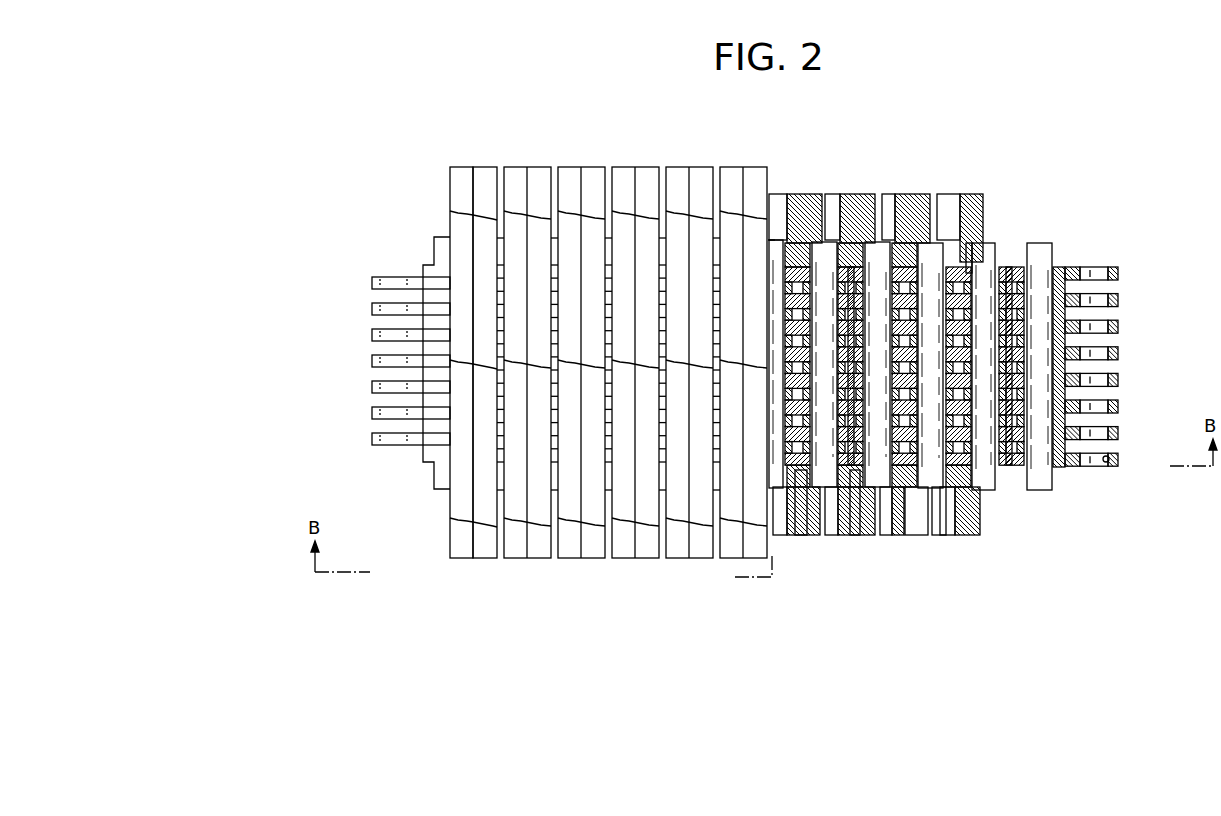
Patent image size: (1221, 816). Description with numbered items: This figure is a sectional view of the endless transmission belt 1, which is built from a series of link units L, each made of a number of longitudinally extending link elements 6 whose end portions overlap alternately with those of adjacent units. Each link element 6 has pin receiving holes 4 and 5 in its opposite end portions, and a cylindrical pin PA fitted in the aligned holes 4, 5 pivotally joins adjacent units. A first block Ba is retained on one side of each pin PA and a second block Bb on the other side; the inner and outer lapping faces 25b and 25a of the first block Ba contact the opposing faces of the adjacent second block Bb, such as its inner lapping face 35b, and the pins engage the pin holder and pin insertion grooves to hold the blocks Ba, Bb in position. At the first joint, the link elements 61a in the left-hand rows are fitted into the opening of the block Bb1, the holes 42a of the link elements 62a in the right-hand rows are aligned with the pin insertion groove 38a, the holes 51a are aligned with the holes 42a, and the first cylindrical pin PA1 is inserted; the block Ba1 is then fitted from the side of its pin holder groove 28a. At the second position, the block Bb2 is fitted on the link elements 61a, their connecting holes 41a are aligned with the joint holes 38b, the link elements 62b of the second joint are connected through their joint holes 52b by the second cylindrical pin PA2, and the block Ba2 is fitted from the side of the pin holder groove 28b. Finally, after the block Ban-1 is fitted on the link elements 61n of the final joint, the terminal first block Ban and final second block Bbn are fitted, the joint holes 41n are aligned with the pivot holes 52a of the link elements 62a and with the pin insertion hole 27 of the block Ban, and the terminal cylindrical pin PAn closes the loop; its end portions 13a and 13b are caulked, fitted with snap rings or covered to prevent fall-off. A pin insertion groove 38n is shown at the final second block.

The first block Ba is at (466, 168).
The second block Bb is at (488, 168).
The link elements in the right-hand rows of the second joint 62b is at (792, 260).
The joint holes 52b is at (803, 258).
The connecting holes 41a is at (832, 260).
The link elements in the left-hand rows of the first joint 61a is at (845, 260).
The holes 51a is at (862, 262).
The holes 42a is at (890, 262).
The link elements in the right-hand rows of the first joint 62a is at (922, 262).
The pivot holes 52a is at (932, 262).
The endless transmission belt 1 is at (952, 138).
The end portion of the terminal cylindrical pin 13b is at (953, 257).
The joint holes 41n is at (960, 247).
The link elements in the left-hand rows of the final joint 61n is at (978, 237).
The block in the n-1 position Ban-1 is at (983, 243).
The link unit L is at (1066, 255).
The link elements 6 is at (1110, 457).
The pin receiving hole 5 is at (1119, 458).
The terminal cylindrical pin PAn is at (1055, 466).
The pin receiving hole 4 is at (1068, 480).
The cylindrical pin PA is at (1043, 490).
The tube 38n is at (1042, 495).
The pin insertion hole 27 is at (957, 502).
The inner lapping face 35b is at (958, 520).
The end portion of the terminal cylindrical pin 13a is at (970, 533).
The final second block Bbn is at (950, 535).
The inner lapping face 25b is at (925, 535).
The terminal first block Ban is at (950, 537).
The outer lapping face 25a is at (912, 535).
The block in the first position Bb1 is at (913, 513).
The pin insertion groove 38a is at (893, 535).
The first cylindrical pin PA1 is at (880, 533).
The block in the first position Ba1 is at (858, 533).
The pin holder groove 28a is at (848, 533).
The block of the second position Bb2 is at (825, 535).
The joint holes 38b is at (807, 533).
The pin holder groove 28b is at (826, 522).
The block in the second position Ba2 is at (783, 537).
The second cylindrical pin PA2 is at (813, 468).